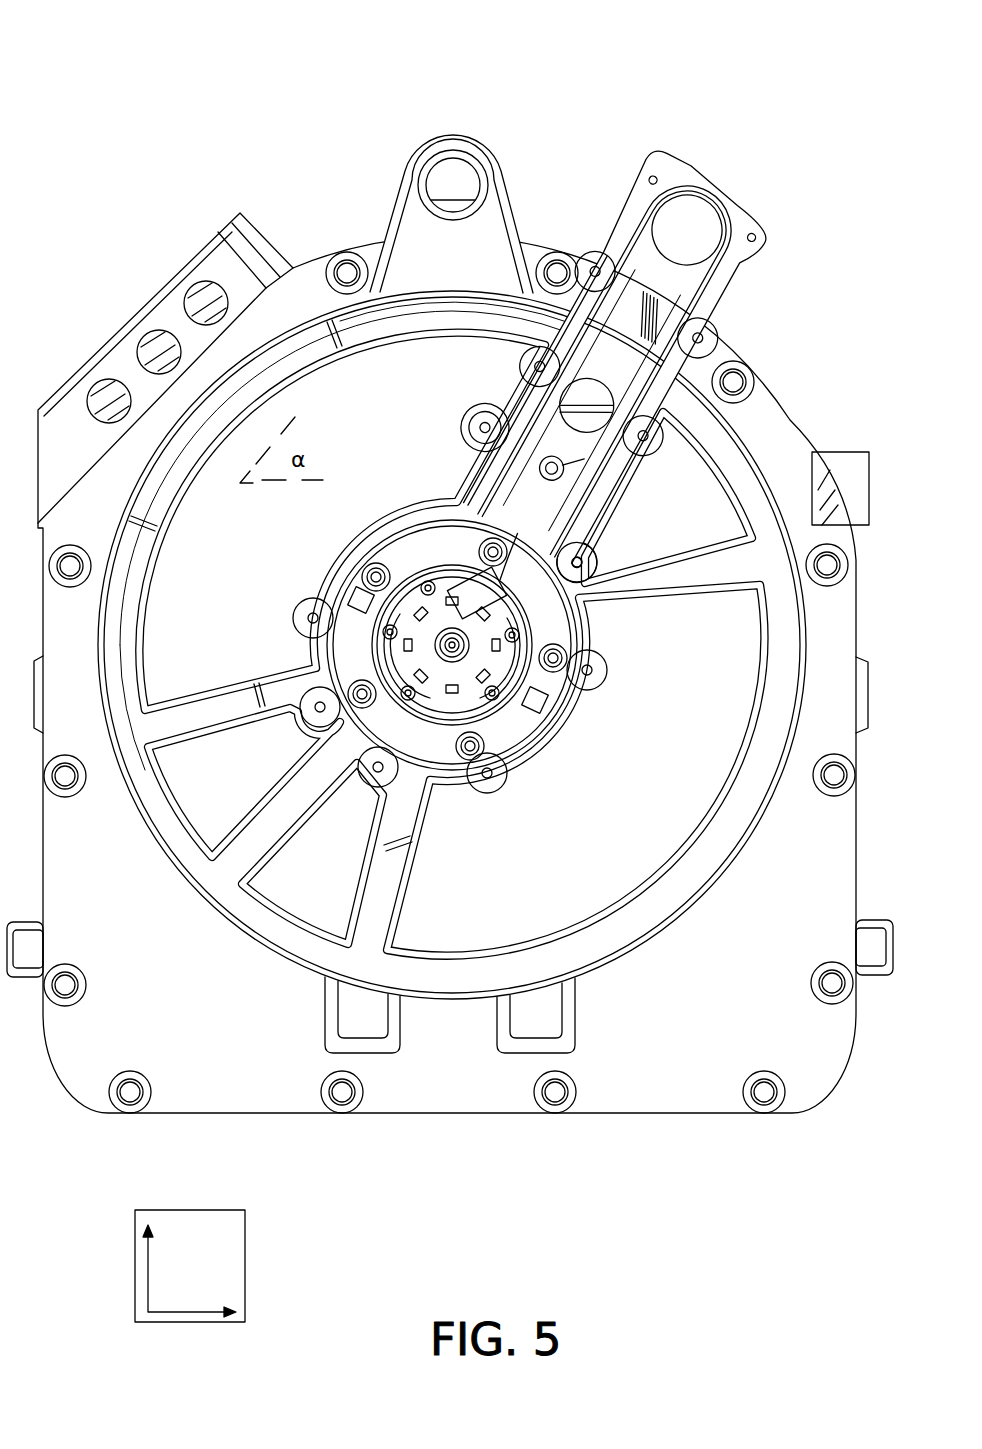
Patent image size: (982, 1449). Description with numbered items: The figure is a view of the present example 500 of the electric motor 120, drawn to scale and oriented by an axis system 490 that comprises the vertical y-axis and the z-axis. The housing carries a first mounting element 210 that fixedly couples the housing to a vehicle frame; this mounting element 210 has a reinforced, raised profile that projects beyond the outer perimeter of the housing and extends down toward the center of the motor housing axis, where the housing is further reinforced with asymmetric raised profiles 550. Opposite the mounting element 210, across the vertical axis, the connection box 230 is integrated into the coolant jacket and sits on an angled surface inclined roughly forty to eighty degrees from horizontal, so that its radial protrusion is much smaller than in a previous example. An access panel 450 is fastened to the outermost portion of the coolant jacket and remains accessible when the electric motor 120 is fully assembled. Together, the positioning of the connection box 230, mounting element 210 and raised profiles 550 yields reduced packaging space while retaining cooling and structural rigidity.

The present example 500 is at (799, 29).
The first mounting element 210 is at (742, 195).
The connection box 230 is at (280, 243).
The access panel 450 is at (170, 290).
The asymmetric raised profiles 550 is at (642, 575).
The electric motor 120 is at (370, 645).
The axis system 490 is at (245, 1210).